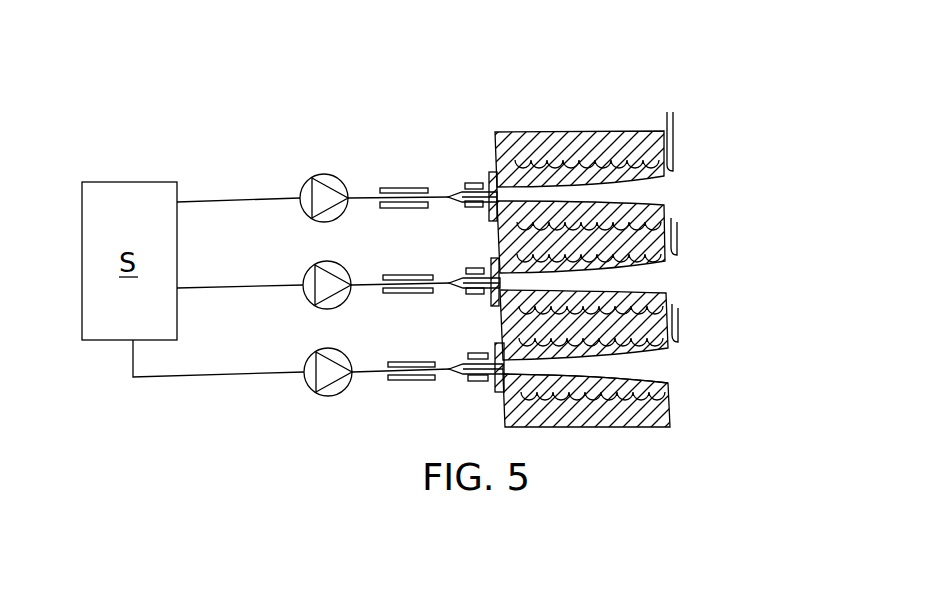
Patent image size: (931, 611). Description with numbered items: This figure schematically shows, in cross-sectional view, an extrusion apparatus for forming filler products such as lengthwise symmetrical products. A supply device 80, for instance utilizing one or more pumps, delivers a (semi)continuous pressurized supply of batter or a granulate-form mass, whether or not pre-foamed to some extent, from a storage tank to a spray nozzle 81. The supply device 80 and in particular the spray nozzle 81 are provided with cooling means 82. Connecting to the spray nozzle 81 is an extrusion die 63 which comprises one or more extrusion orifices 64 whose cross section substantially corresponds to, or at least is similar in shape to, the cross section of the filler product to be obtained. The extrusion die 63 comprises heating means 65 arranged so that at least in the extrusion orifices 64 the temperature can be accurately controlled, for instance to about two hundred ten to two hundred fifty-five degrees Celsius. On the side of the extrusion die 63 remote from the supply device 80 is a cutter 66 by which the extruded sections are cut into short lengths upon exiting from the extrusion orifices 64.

The extrusion die 63 is at (567, 103).
The extrusion orifice 64 is at (635, 190).
The heating means 65 is at (668, 392).
The cutter 66 is at (675, 141).
The supply device 80 is at (299, 150).
The spray nozzle 81 is at (455, 189).
The cooling means 82 is at (393, 186).